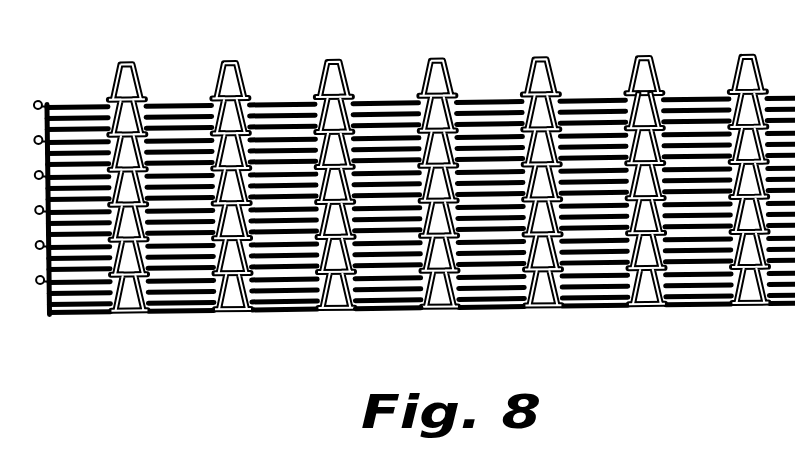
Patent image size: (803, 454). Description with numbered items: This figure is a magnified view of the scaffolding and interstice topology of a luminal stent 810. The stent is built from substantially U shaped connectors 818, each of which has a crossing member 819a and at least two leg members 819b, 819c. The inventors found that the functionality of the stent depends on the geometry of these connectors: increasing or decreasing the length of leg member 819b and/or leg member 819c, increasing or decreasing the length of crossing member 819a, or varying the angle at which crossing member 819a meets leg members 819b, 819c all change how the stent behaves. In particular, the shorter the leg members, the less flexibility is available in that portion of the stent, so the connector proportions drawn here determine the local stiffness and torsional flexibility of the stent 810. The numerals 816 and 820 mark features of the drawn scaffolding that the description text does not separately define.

The luminal stent 810 is at (263, 317).
The connector struts 816 is at (372, 303).
The U shaped connector 818 is at (652, 81).
The crossing member 819a is at (632, 300).
The leg member 819b is at (531, 282).
The leg member 819c is at (738, 282).
The eyelets 820 is at (34, 89).